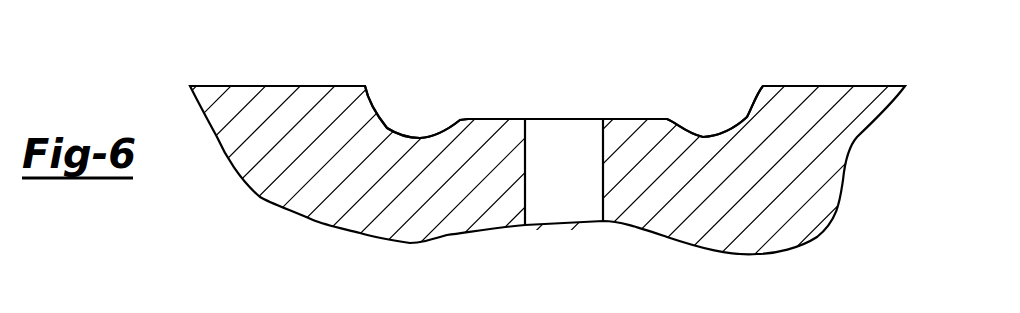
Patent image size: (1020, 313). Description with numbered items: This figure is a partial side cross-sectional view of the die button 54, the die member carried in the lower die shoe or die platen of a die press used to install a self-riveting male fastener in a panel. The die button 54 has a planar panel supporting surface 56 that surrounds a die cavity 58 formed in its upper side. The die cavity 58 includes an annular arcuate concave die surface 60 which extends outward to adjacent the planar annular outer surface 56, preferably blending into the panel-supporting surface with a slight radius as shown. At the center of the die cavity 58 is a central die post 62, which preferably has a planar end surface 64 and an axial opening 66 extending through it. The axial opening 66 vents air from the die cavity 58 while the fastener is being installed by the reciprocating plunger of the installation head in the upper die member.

The die button 54 is at (363, 215).
The planar panel supporting surface 56 is at (293, 86).
The die cavity 58 is at (613, 108).
The annular arcuate concave die surface 60 is at (388, 127).
The central die post 62 is at (635, 127).
The planar end surface 64 is at (494, 118).
The axial opening 66 is at (527, 193).